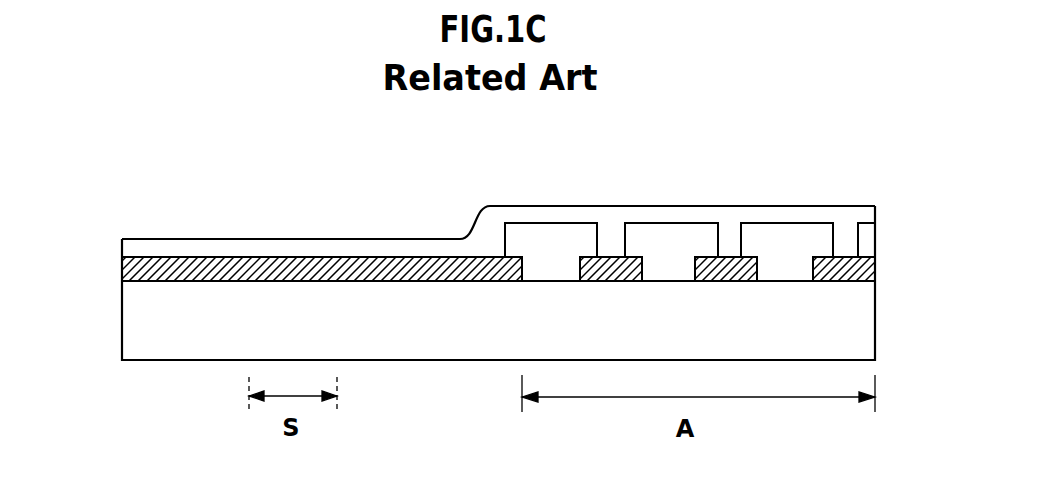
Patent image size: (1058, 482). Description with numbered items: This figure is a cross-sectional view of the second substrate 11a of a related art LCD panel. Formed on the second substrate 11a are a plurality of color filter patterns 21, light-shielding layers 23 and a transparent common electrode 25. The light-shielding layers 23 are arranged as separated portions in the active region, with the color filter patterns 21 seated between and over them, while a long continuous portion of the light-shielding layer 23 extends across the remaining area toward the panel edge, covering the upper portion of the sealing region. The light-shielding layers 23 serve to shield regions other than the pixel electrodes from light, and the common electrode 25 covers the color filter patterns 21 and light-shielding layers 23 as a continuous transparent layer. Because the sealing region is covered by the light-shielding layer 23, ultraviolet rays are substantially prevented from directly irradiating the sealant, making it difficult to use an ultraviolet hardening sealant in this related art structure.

The second substrate 11a is at (868, 325).
The color filter pattern 21 is at (671, 233).
The light shielding layer 23 is at (130, 265).
The common electrode 25 is at (868, 213).